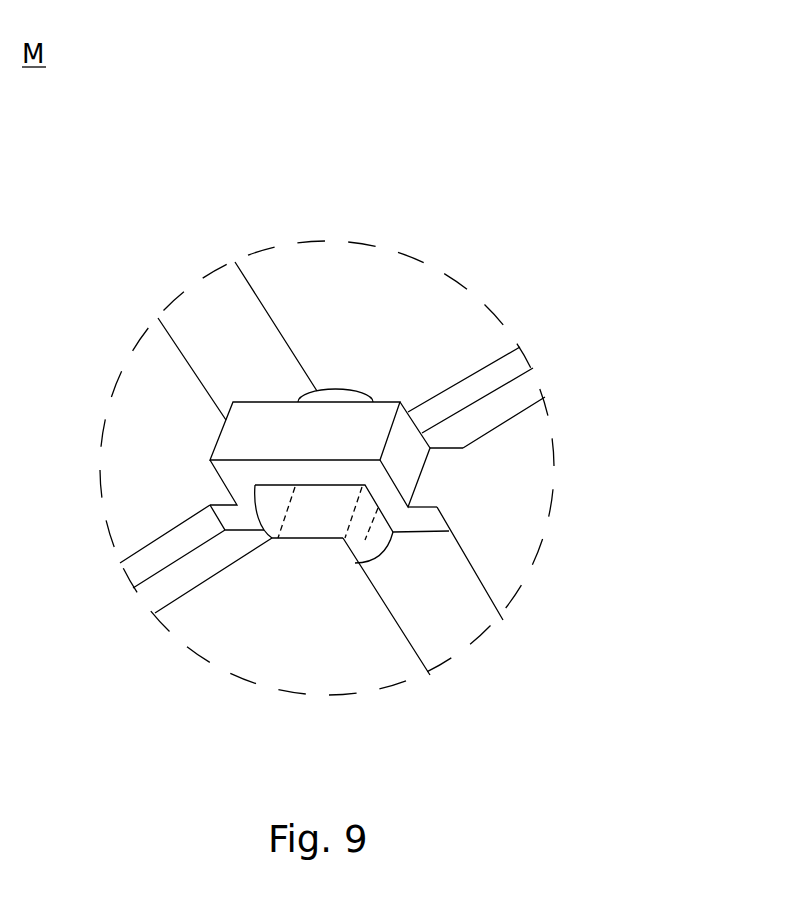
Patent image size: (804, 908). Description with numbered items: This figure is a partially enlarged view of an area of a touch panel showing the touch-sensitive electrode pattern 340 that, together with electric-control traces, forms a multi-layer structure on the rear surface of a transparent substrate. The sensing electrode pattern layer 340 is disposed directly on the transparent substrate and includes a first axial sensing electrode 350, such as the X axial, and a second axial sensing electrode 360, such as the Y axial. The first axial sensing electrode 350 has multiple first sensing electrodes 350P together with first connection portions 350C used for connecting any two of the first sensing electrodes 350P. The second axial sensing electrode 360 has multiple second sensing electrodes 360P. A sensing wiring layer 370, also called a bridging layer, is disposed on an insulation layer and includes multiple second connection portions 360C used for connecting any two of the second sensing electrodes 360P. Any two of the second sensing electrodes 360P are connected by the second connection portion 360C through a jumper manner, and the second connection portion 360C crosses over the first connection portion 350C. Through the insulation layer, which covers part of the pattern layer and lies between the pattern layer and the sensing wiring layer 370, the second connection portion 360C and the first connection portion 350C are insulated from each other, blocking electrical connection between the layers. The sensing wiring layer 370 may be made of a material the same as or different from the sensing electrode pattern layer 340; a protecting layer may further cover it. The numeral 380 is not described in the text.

The touch-sensitive electrode pattern 340 is at (308, 185).
The first axial sensing electrode 350 is at (290, 280).
The first connection portion 350C is at (367, 548).
The first sensing electrode 350P is at (360, 271).
The second axial sensing electrode 360 is at (153, 385).
The second connection portion 360C is at (366, 417).
The second sensing electrode 360P is at (113, 448).
The sensing wiring layer 370 is at (403, 400).
The recess 380 is at (277, 502).